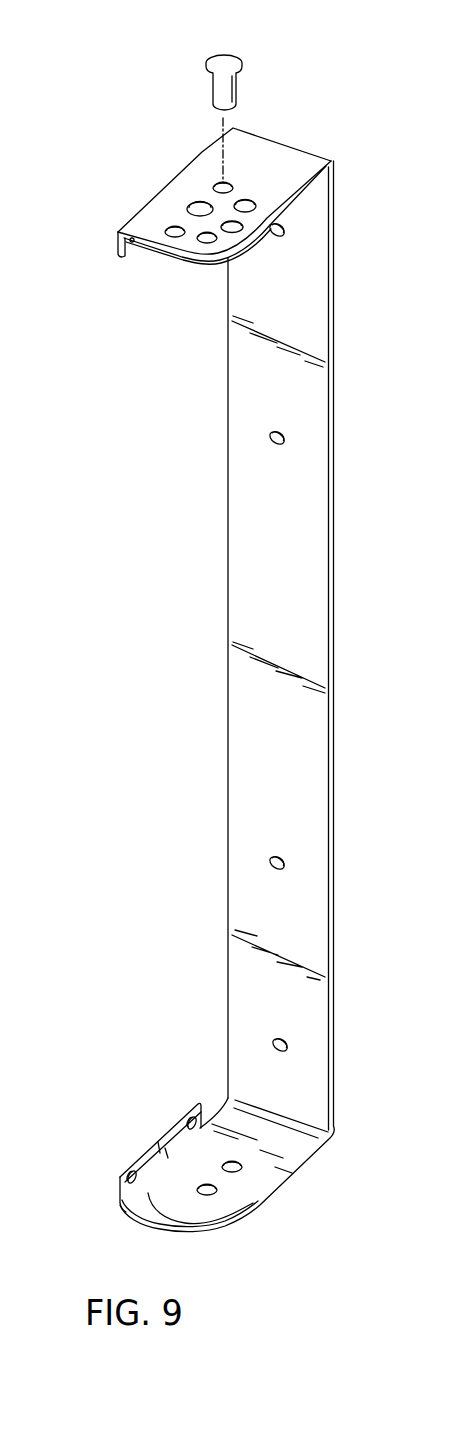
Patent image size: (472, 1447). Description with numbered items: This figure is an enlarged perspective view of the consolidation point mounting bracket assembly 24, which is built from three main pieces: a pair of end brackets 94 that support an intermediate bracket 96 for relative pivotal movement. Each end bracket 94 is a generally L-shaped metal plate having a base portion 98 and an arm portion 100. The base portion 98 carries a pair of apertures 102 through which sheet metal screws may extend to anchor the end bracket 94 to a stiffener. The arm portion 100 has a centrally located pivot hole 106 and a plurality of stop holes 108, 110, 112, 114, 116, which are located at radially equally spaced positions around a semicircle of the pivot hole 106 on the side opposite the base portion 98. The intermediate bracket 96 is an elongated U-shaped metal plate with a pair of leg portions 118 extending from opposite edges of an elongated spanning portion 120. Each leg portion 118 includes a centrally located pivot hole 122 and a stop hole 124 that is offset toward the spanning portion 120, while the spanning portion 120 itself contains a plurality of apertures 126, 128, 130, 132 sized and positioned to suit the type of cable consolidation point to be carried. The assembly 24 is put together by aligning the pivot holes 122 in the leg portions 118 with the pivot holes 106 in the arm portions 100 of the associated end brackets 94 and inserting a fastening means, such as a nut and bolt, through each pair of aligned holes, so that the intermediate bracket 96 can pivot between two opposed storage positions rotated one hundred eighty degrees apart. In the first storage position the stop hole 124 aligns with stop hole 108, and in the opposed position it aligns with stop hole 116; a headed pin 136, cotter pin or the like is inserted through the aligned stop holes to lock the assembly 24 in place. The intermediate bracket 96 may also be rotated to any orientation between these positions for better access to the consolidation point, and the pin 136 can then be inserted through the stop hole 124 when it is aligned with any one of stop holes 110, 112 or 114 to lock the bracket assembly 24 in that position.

The CP mounting bracket assembly 24 is at (229, 672).
The end bracket 94 is at (223, 702).
The intermediate bracket 96 is at (330, 508).
The base portion 98 is at (118, 254).
The arm portion 100 is at (151, 246).
The apertures 102 is at (117, 237).
The pivot hole 106 is at (197, 206).
The stop hole 108 is at (228, 186).
The stop hole 110 is at (254, 206).
The stop hole 112 is at (238, 233).
The stop hole 114 is at (207, 243).
The stop hole 116 is at (172, 230).
The leg portion 118 is at (312, 187).
The spanning portion 120 is at (330, 650).
The pivot hole 122 is at (218, 1190).
The stop hole 124 is at (242, 1166).
The aperture 126 is at (286, 237).
The aperture 128 is at (287, 432).
The aperture 130 is at (288, 858).
The aperture 132 is at (290, 1040).
The headed pin 136 is at (230, 61).